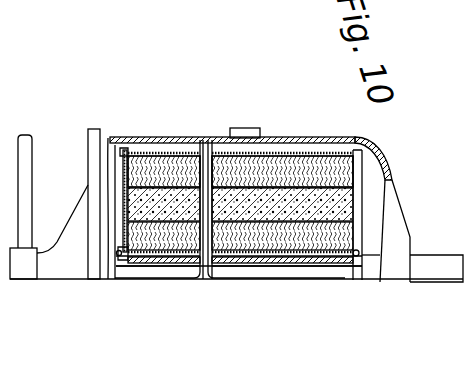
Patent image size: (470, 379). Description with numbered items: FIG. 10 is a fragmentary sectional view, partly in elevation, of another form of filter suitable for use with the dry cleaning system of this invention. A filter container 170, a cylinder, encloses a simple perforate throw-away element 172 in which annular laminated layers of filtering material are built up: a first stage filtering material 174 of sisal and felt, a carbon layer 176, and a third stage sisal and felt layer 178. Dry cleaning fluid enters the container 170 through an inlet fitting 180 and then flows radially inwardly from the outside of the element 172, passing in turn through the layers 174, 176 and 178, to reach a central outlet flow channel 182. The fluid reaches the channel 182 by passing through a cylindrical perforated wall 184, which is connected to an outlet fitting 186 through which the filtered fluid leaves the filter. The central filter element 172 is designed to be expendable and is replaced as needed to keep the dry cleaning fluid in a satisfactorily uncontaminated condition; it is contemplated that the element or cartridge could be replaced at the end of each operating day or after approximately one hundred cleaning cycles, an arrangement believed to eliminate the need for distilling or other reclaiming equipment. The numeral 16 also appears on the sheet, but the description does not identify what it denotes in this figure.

The wall 16 is at (90, 0).
The filter container 170 is at (398, 190).
The perforate throw-away element 172 is at (162, 152).
The first stage filtering material 174 is at (303, 165).
The carbon layer 176 is at (190, 188).
The third stage sisal and felt layer 178 is at (135, 235).
The inlet fitting 180 is at (237, 128).
The outlet flow channel 182 is at (310, 268).
The cylindrical perforated wall 184 is at (255, 263).
The outlet fitting 186 is at (435, 268).